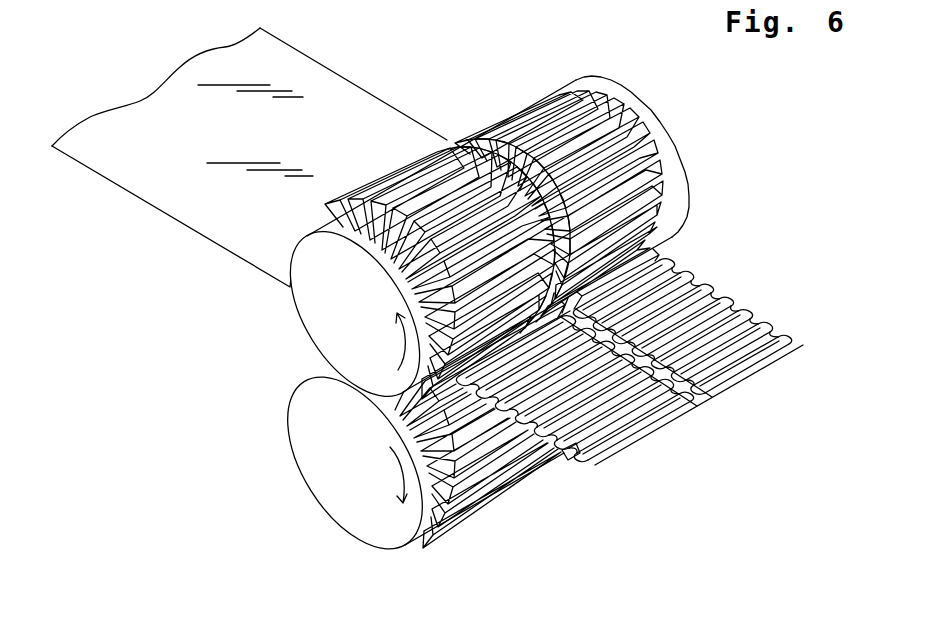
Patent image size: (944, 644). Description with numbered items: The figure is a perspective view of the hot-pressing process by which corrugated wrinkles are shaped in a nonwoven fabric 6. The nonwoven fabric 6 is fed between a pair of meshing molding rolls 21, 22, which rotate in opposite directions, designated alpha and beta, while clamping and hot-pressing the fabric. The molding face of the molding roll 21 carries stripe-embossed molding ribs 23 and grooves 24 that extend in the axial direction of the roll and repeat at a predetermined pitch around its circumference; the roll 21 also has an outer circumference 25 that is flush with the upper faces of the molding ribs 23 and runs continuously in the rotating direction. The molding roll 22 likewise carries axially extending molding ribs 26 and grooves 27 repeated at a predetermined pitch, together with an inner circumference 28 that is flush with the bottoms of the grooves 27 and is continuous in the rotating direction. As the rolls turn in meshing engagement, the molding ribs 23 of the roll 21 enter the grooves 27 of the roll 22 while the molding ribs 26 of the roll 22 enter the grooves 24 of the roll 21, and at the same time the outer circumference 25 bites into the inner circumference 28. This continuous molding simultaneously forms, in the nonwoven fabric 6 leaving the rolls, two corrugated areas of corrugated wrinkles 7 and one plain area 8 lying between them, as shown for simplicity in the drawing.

The nonwoven fabric 6 is at (641, 352).
The corrugated wrinkles 7 is at (760, 357).
The plain area 8 is at (693, 402).
The molding roll 21 is at (325, 320).
The molding roll 22 is at (338, 508).
The molding ribs 23 is at (433, 202).
The grooves 24 is at (553, 122).
The outer circumference 25 is at (490, 157).
The molding ribs 26 is at (513, 470).
The grooves 27 is at (473, 477).
The inner circumference 28 is at (567, 452).